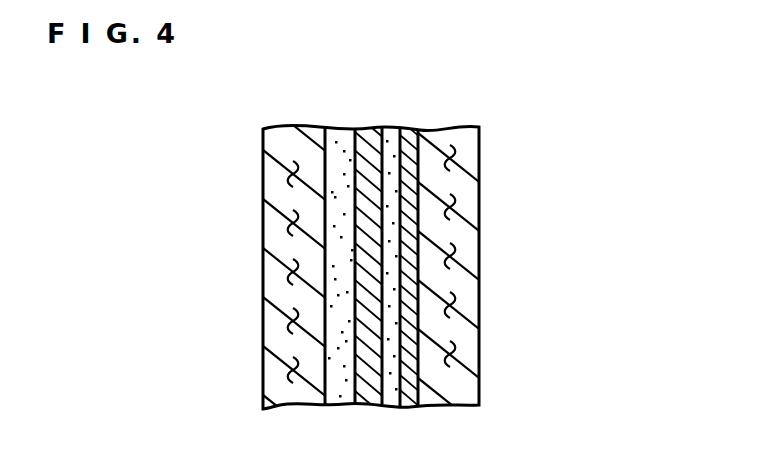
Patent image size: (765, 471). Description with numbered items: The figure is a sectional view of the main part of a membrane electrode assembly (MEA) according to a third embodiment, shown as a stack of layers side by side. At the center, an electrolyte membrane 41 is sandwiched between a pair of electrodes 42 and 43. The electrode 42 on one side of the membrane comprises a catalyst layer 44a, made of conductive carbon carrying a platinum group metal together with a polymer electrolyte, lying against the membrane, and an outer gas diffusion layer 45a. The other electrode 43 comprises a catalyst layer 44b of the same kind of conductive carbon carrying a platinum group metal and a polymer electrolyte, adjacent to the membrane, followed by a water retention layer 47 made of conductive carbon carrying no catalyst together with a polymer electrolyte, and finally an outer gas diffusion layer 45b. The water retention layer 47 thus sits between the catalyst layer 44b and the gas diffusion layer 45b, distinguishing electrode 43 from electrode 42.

The electrolyte membrane 41 is at (369, 128).
The electrode 42 is at (355, 62).
The electrode 43 is at (562, 70).
The catalyst layer 44a is at (336, 130).
The catalyst layer 44b is at (393, 131).
The gas diffusion layer 45a is at (294, 130).
The gas diffusion layer 45b is at (443, 128).
The water retention layer 47 is at (409, 131).